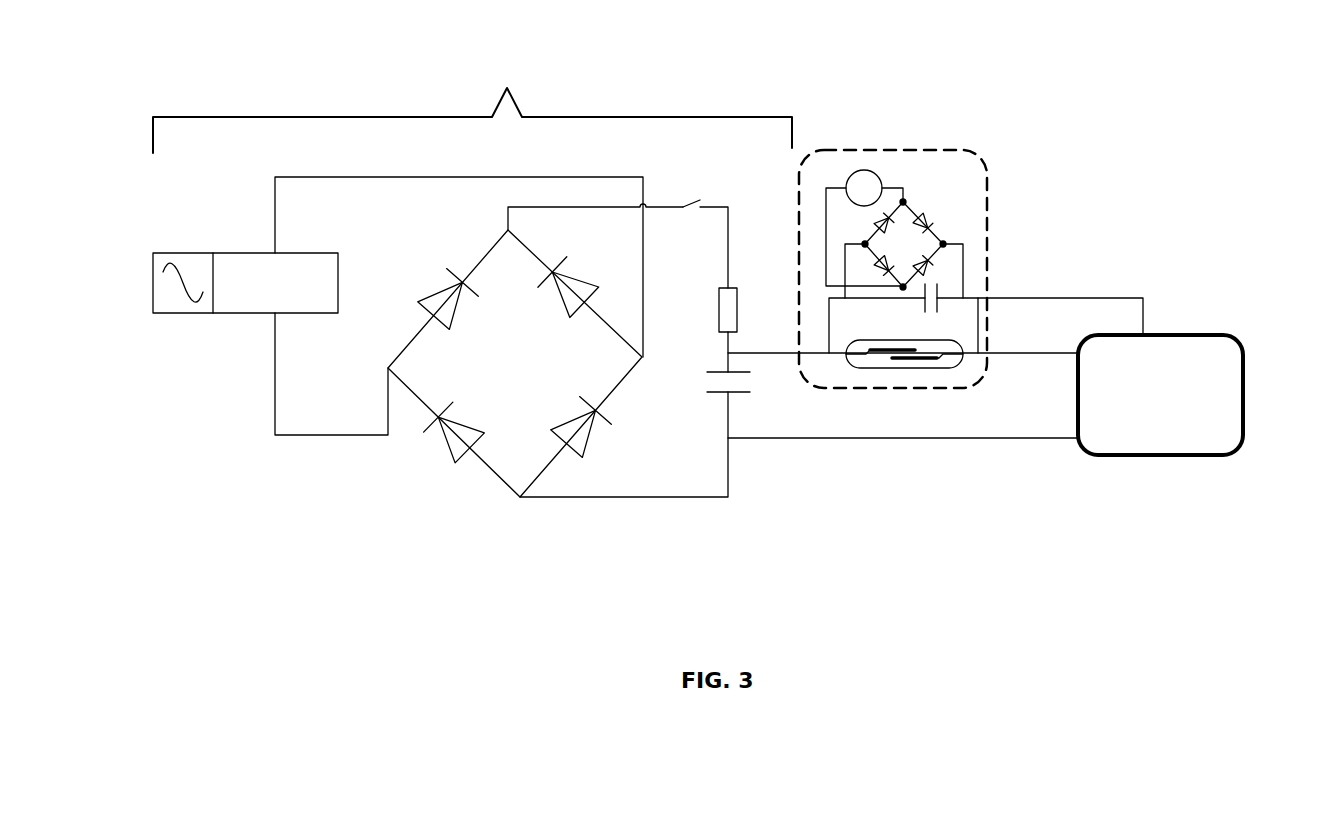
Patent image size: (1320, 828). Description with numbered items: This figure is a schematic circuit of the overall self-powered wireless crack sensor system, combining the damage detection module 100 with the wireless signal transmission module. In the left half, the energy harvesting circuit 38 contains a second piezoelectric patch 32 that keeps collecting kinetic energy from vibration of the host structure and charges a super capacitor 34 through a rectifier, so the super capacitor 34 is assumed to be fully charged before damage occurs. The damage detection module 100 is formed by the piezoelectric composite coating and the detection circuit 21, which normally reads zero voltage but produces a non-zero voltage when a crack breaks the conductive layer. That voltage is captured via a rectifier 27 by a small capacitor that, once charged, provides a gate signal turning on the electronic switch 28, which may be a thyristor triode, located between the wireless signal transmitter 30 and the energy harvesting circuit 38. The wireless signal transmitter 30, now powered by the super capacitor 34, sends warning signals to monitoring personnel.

The energy harvesting circuit 38 is at (472, 103).
The second piezoelectric patch 32 is at (237, 272).
The super capacitor 34 is at (737, 398).
The damage detection module 100 is at (1004, 204).
The detection circuit 21 is at (840, 178).
The rectifier 27 is at (926, 203).
The electronic switch 28 is at (866, 341).
The wireless signal transmitter 30 is at (1190, 350).